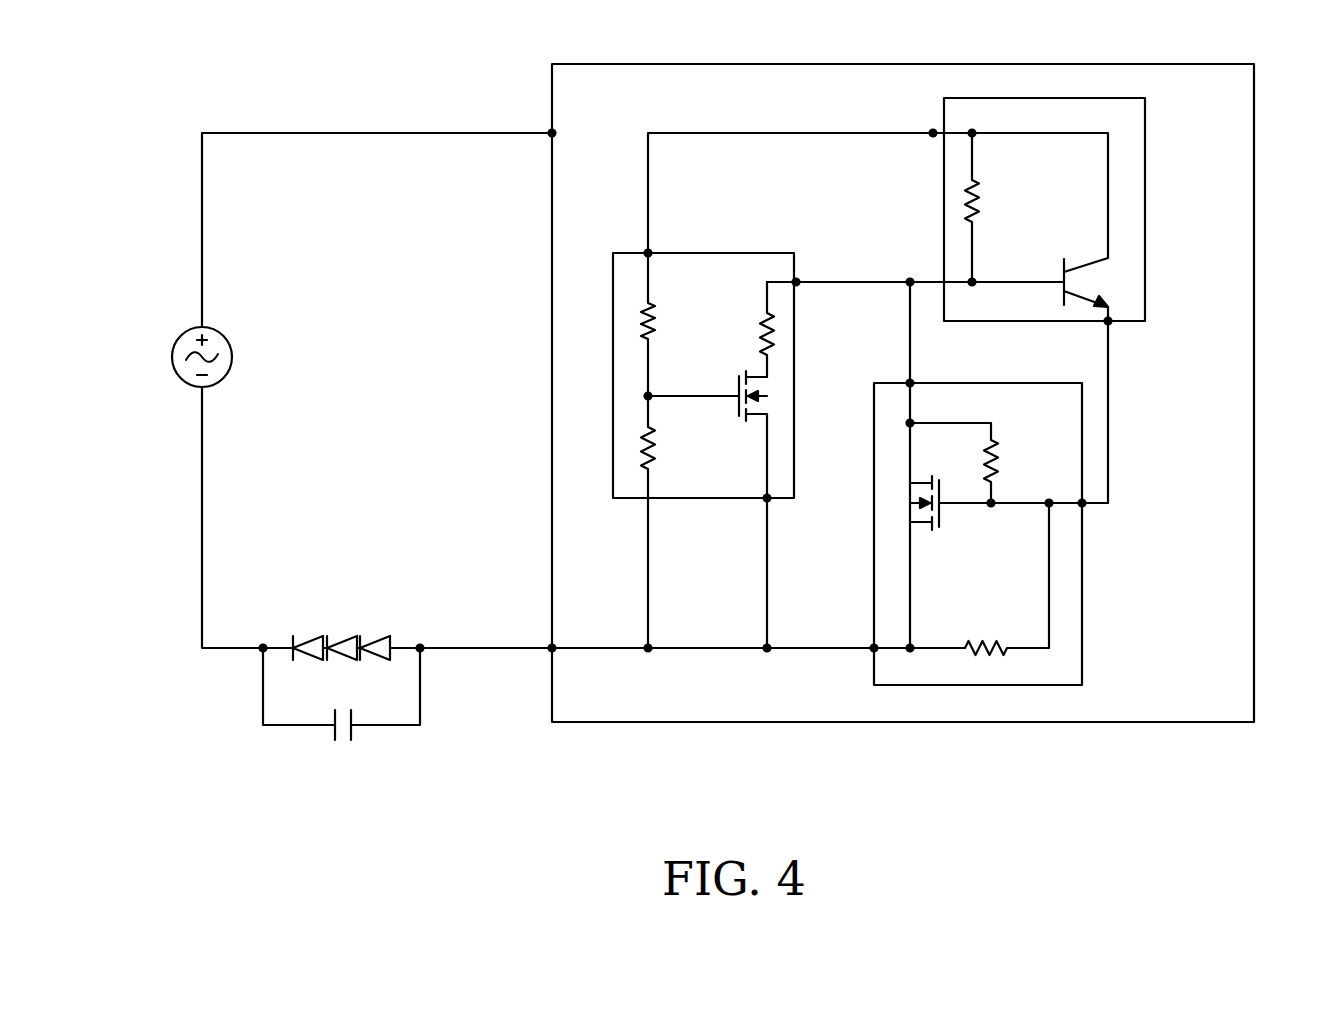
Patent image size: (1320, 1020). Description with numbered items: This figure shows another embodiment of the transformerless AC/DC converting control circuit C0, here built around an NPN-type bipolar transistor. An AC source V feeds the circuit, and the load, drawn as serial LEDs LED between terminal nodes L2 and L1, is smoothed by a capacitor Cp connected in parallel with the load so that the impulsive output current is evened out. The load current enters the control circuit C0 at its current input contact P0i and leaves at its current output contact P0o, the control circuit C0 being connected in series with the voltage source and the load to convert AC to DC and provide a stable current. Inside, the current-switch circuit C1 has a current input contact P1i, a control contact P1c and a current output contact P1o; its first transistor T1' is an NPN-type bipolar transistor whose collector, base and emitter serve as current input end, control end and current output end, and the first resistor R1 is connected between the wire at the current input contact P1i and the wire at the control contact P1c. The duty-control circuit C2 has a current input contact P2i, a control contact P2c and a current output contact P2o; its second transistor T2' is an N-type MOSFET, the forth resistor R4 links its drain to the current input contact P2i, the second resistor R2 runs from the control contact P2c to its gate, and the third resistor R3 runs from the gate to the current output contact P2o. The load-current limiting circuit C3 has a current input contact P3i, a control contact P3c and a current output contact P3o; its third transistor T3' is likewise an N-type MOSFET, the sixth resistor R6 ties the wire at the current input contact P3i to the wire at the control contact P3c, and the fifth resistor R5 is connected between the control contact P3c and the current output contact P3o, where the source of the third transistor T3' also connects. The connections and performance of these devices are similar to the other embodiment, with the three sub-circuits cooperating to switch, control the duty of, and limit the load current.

The AC voltage source V is at (187, 357).
The LED string terminal node L2 is at (268, 626).
The serial LEDs LED is at (341, 627).
The LED string terminal node L1 is at (416, 626).
The capacitor Cp is at (341, 714).
The control circuit C0 is at (1254, 437).
The current input contact P0i is at (521, 110).
The current output contact P0o is at (523, 669).
The duty-control circuit C2 is at (740, 253).
The control contact P2c is at (624, 238).
The second resistor R2 is at (667, 324).
The third resistor R3 is at (667, 522).
The forth resistor R4 is at (748, 329).
The second transistor T2' is at (707, 434).
The current input contact P2i is at (838, 296).
The current output contact P2o is at (793, 573).
The current-switch circuit C1 is at (1145, 215).
The current input contact P1i is at (997, 176).
The first resistor R1 is at (994, 208).
The control contact P1c is at (940, 276).
The first transistor T1' is at (1079, 270).
The current output contact P1o is at (1136, 411).
The load-current limiting circuit C3 is at (1082, 590).
The current input contact P3i is at (938, 352).
The sixth resistor R6 is at (973, 463).
The third transistor T3' is at (1009, 535).
The control contact P3c is at (1110, 518).
The fifth resistor R5 is at (980, 578).
The current output contact P3o is at (852, 662).